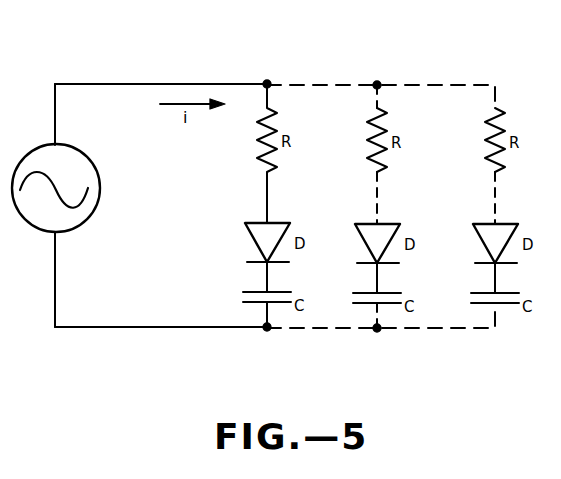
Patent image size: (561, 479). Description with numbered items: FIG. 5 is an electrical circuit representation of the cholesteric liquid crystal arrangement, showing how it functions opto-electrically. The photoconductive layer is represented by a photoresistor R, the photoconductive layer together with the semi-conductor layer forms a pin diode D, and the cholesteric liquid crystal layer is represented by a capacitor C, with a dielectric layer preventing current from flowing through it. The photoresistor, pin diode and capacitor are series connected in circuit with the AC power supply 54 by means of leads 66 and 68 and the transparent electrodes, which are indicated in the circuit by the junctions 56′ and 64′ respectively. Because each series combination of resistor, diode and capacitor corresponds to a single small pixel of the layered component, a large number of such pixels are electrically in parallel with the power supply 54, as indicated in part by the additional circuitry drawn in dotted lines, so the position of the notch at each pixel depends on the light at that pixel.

The lead 66 is at (150, 84).
The lead 68 is at (137, 328).
The AC power supply 54 is at (96, 211).
The junction 56′ is at (268, 83).
The junction 64′ is at (268, 331).